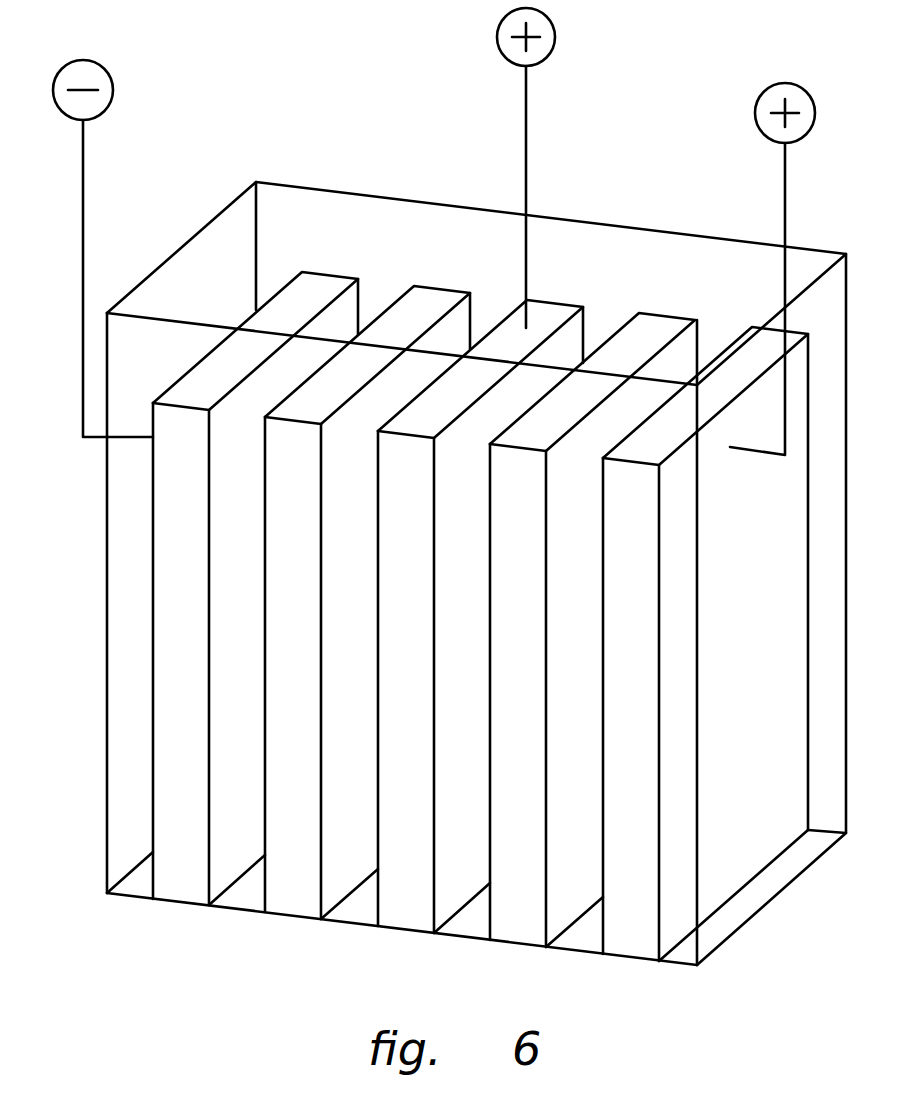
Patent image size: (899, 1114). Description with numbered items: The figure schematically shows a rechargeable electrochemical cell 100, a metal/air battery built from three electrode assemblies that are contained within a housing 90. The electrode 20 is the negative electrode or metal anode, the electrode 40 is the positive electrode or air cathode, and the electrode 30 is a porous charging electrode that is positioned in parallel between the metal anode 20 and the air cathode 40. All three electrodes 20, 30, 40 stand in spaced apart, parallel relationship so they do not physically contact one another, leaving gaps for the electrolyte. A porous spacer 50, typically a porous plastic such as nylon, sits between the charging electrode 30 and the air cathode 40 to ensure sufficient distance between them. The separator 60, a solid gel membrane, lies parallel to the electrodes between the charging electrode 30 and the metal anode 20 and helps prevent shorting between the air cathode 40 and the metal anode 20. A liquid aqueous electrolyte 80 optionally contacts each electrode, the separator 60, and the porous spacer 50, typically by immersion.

The metal anode 20 is at (168, 748).
The porous charging electrode 30 is at (547, 310).
The air cathode 40 is at (637, 948).
The porous spacer 50 is at (532, 932).
The separator 60 is at (303, 908).
The liquid electrolyte 80 is at (135, 887).
The housing 90 is at (295, 188).
The rechargeable electrochemical cell 100 is at (732, 1010).